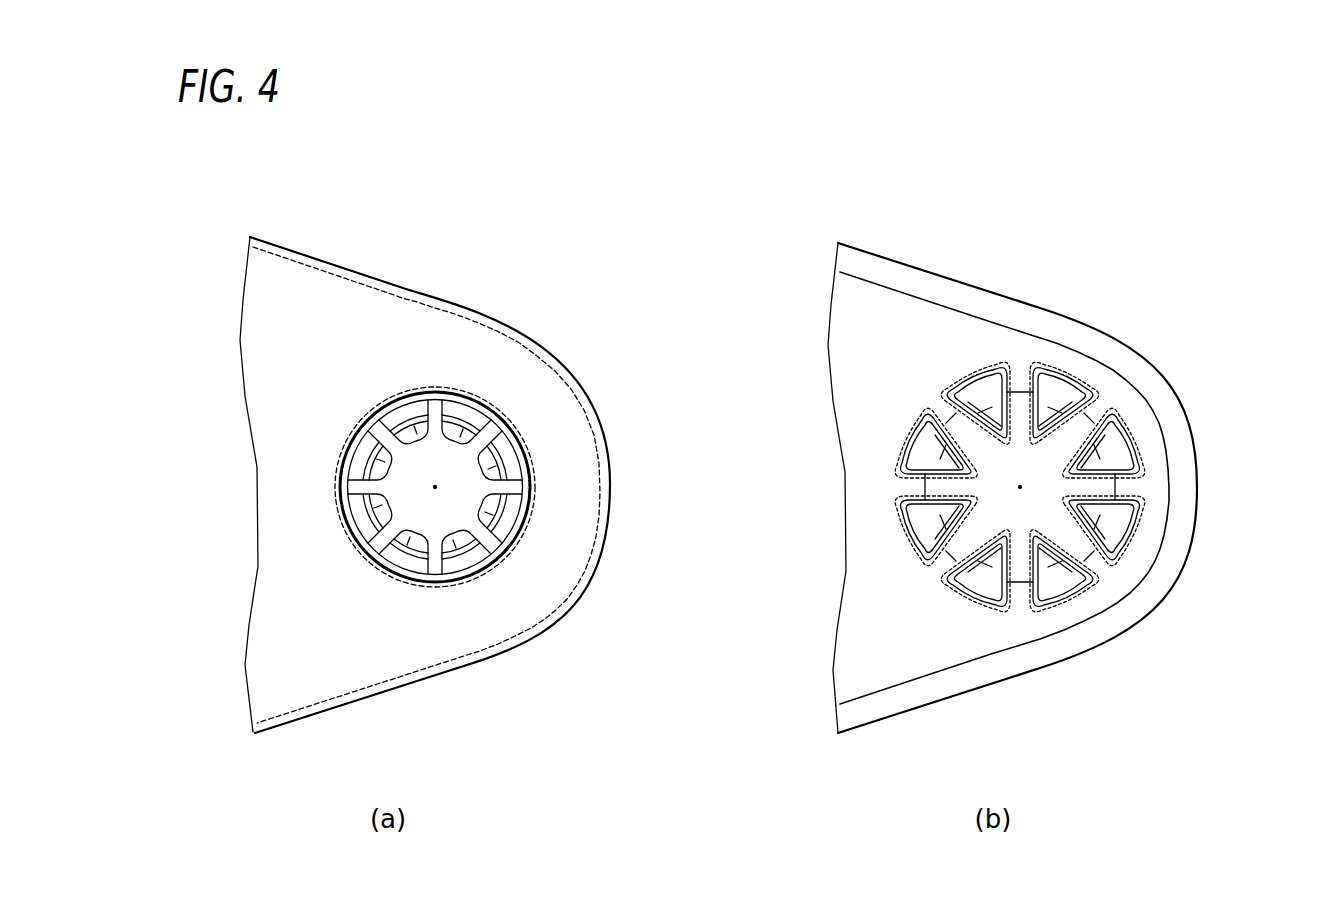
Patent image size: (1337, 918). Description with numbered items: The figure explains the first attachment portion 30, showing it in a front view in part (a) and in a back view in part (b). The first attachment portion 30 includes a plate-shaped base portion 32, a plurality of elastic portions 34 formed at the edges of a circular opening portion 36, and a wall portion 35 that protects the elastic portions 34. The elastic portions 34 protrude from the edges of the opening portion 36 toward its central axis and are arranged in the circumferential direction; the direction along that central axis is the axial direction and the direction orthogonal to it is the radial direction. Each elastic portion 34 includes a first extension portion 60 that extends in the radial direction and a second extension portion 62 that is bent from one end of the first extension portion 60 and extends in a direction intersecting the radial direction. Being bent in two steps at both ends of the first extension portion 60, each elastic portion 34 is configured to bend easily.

The first attachment portion 30 is at (512, 654).
The base portion 32 is at (338, 307).
The elastic portions 34 is at (400, 389).
The wall portion 35 is at (878, 708).
The opening portion 36 is at (437, 485).
The first extension portion 60 is at (527, 512).
The second extension portion 62 is at (521, 530).